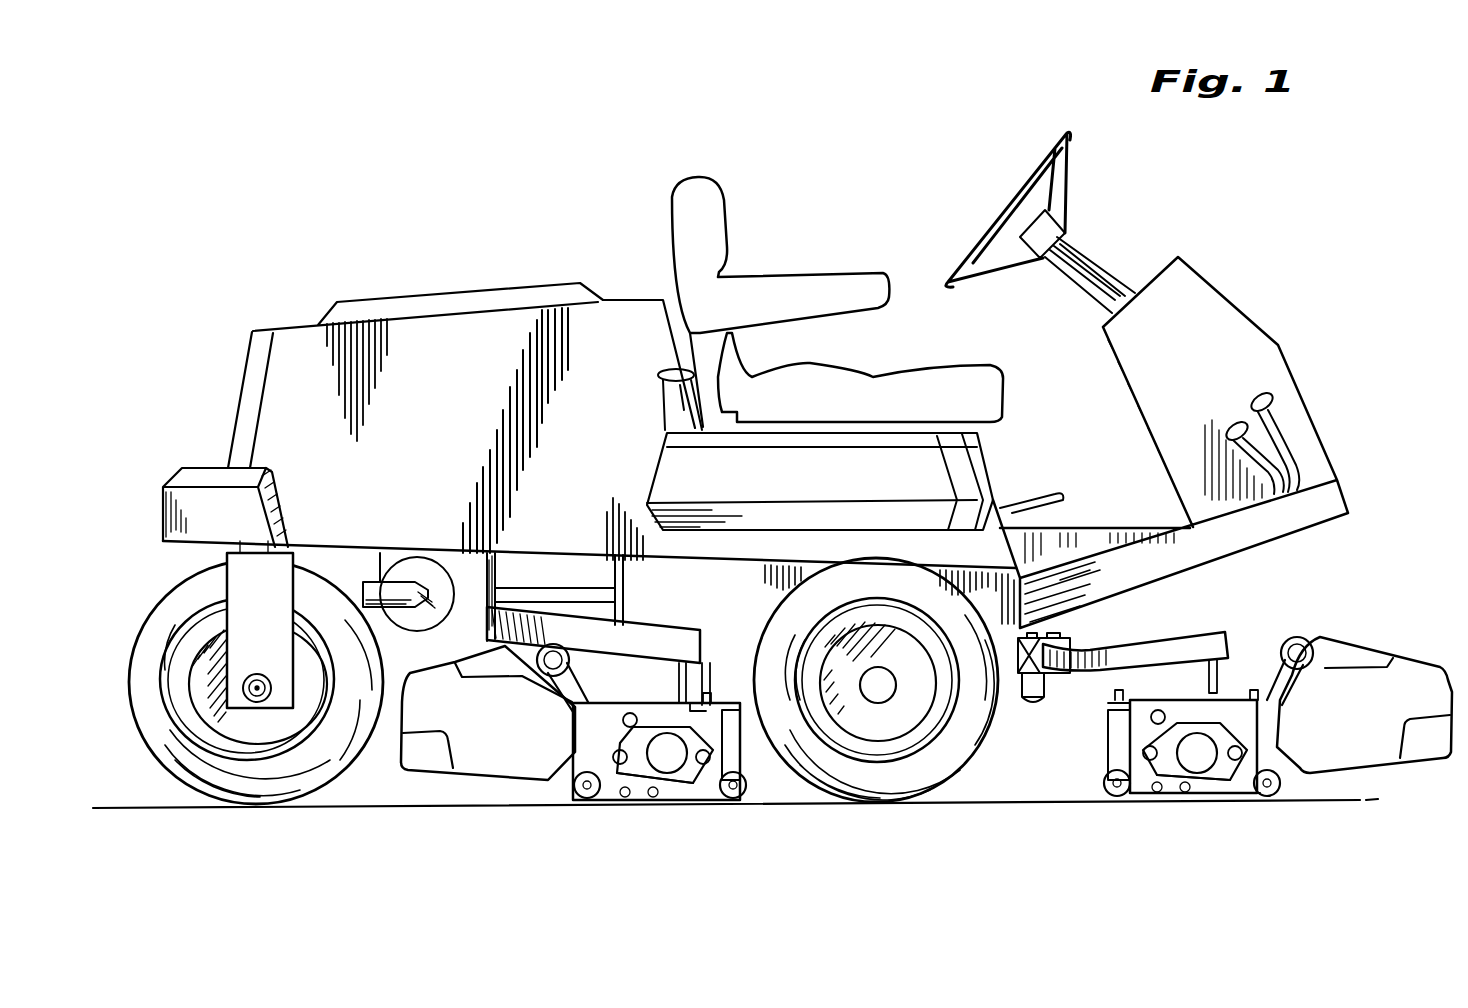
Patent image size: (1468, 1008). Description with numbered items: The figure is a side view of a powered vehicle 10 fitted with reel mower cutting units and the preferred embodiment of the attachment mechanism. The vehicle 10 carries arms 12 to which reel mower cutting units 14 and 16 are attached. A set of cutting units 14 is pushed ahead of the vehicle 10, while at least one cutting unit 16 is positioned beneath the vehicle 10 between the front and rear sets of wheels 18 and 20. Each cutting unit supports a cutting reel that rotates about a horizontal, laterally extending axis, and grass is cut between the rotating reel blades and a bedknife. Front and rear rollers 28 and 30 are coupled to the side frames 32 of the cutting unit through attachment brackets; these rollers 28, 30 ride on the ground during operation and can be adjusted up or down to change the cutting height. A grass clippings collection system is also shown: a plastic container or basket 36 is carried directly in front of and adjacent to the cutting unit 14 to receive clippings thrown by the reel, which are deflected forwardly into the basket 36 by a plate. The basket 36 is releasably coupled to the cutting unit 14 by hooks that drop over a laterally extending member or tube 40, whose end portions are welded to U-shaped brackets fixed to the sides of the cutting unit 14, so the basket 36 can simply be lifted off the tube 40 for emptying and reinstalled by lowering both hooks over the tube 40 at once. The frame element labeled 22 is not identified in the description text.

The powered vehicle 10 is at (557, 198).
The arms 12 is at (653, 613).
The reel mower cutting unit 14 is at (1177, 808).
The cutting unit 16 is at (650, 825).
The wheels 18 is at (988, 758).
The wheels 20 is at (145, 757).
The cutting unit frame 22 is at (633, 792).
The front roller 28 is at (753, 803).
The rear roller 30 is at (567, 786).
The side frames 32 is at (683, 795).
The basket 36 is at (482, 719).
The tube 40 is at (575, 677).